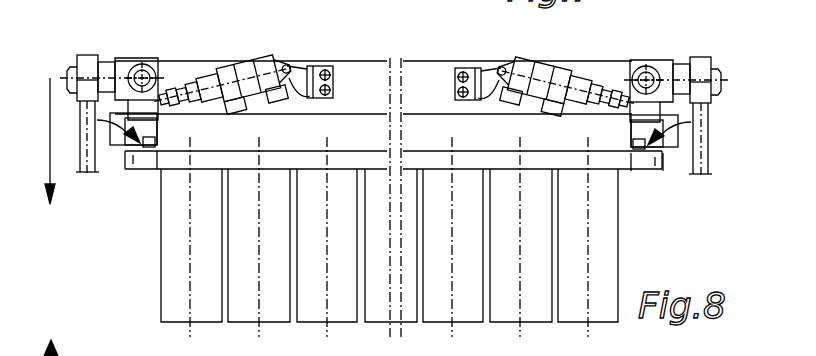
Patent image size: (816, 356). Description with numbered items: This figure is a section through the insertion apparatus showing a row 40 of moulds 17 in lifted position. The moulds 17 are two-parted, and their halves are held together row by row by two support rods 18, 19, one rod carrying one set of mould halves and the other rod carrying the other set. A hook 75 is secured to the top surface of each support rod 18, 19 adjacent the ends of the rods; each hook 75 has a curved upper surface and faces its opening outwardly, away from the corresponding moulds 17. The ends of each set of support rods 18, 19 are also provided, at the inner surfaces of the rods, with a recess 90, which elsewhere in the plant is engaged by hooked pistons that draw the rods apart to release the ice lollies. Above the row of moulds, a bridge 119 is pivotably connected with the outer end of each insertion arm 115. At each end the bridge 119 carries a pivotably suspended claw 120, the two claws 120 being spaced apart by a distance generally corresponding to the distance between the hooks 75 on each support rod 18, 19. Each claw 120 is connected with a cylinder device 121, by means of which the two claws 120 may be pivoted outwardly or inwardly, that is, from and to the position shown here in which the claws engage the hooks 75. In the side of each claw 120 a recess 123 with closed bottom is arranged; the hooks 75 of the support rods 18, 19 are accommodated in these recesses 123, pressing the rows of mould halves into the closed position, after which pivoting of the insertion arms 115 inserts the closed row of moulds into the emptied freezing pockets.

The moulds 17 is at (172, 293).
The support rod 18 is at (386, 178).
The support rod 19 is at (157, 160).
The row of moulds 40 is at (392, 246).
The hook 75 is at (143, 128).
The recess 90 is at (128, 156).
The insertion arm 115 is at (92, 162).
The bridge 119 is at (368, 67).
The claw 120 is at (151, 99).
The cylinder device 121 is at (253, 40).
The recess 123 is at (140, 118).